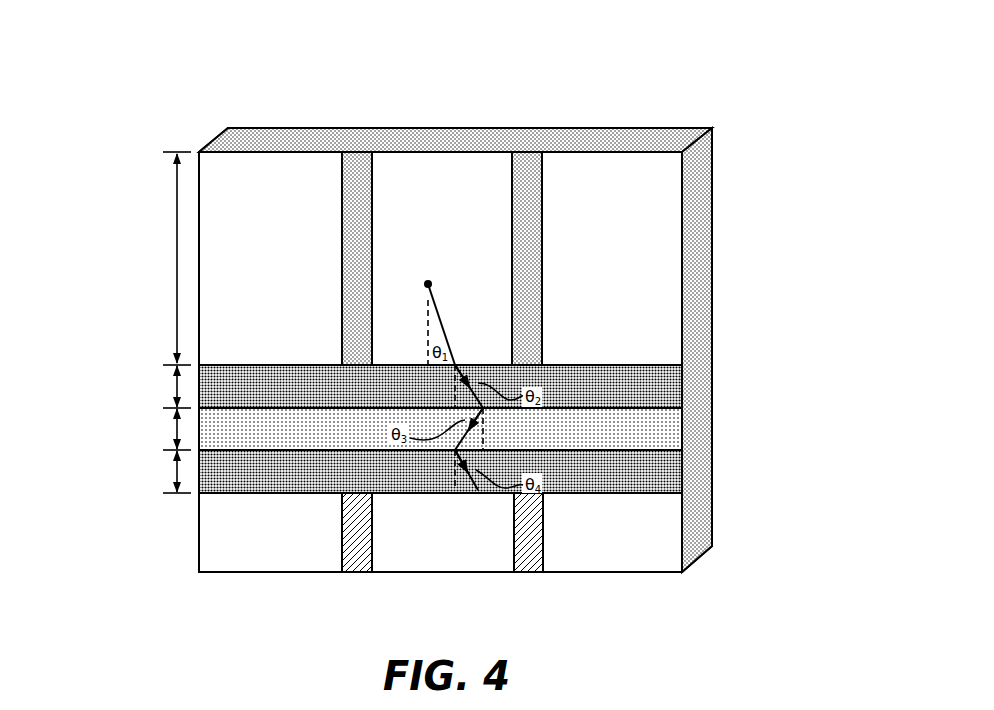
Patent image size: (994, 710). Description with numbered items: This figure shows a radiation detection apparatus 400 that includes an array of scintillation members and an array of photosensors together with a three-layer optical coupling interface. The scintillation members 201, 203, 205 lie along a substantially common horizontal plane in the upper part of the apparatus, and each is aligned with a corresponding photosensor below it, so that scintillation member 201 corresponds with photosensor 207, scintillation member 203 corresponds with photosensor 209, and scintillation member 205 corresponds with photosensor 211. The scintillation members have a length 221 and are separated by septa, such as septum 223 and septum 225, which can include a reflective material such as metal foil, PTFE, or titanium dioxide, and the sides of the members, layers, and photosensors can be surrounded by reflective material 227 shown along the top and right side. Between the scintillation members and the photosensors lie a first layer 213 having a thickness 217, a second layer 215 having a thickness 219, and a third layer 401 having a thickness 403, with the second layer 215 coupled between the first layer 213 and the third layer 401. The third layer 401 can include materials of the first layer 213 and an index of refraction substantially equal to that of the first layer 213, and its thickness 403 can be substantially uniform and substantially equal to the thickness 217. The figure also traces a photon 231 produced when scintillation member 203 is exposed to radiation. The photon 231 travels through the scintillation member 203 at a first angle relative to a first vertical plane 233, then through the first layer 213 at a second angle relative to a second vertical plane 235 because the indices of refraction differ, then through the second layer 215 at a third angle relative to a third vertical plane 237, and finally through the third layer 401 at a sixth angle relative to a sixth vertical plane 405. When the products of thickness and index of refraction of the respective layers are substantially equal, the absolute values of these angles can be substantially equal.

The radiation detection apparatus 400 is at (118, 102).
The scintillation member 201 is at (290, 270).
The scintillation member 203 is at (463, 270).
The scintillation member 205 is at (632, 270).
The photosensor 207 is at (290, 544).
The photosensor 209 is at (462, 544).
The photosensor 211 is at (631, 544).
The first layer 213 is at (653, 393).
The second layer 215 is at (660, 440).
The third layer 401 is at (660, 472).
The thickness of the first layer 217 is at (172, 385).
The thickness of the second layer 219 is at (172, 430).
The thickness of the third layer 403 is at (172, 472).
The length of the scintillation members 221 is at (173, 222).
The septum 223 is at (353, 182).
The septum 225 is at (522, 182).
The reflective material 227 is at (688, 228).
The photon 231 is at (432, 286).
The first vertical plane 233 is at (425, 303).
The second vertical plane 235 is at (458, 375).
The third vertical plane 237 is at (490, 424).
The sixth vertical plane 405 is at (455, 460).